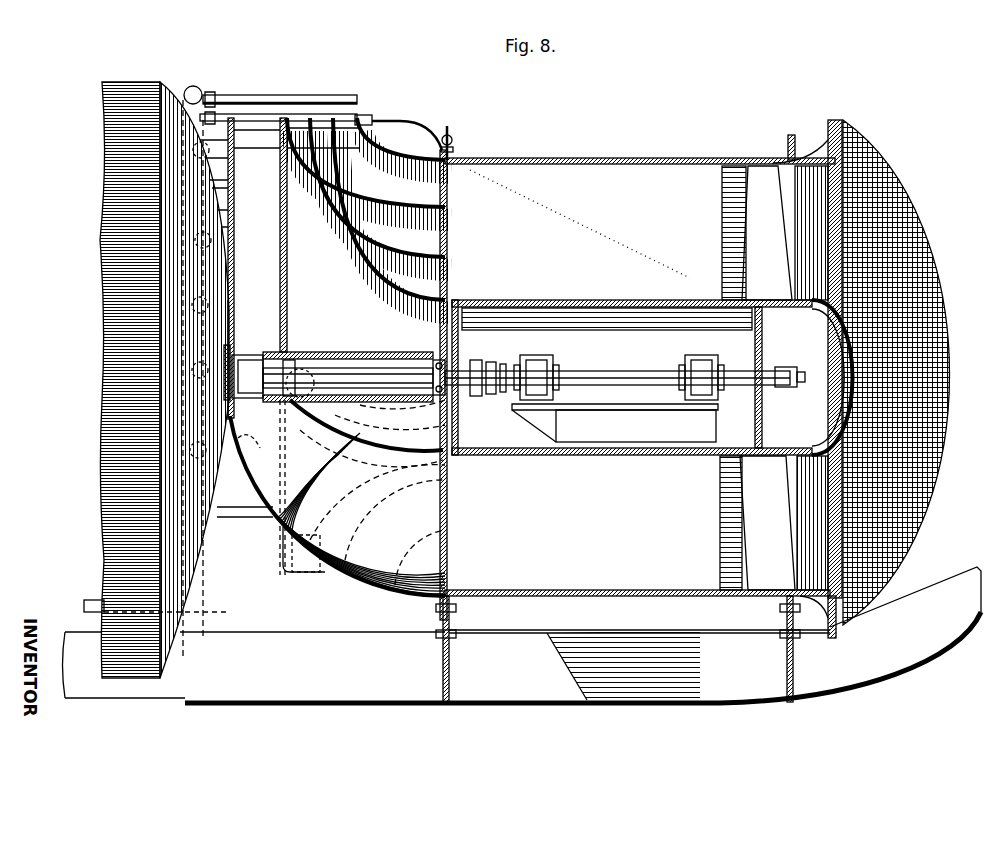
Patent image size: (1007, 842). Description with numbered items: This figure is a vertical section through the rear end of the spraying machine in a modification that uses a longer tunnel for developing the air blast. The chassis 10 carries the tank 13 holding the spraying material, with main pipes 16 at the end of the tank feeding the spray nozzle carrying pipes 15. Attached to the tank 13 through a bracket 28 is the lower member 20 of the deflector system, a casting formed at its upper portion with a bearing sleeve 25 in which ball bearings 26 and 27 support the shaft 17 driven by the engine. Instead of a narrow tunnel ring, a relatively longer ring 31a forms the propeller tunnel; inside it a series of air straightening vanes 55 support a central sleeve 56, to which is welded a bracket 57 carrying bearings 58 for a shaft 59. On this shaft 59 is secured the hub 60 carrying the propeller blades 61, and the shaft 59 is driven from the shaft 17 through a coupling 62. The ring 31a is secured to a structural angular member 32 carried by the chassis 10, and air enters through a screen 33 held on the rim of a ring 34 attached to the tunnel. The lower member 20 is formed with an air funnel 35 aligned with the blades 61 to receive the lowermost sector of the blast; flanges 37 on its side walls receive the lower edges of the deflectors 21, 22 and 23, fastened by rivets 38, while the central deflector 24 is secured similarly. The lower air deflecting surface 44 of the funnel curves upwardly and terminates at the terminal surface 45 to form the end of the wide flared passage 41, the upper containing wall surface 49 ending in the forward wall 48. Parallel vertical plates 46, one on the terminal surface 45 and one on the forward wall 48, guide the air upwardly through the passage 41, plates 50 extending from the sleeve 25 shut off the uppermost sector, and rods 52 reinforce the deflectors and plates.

The chassis 10 is at (158, 702).
The tank 13 is at (106, 386).
The spray nozzle carrying pipes 15 is at (222, 97).
The main pipes 16 is at (193, 86).
The shaft 17 is at (375, 368).
The lower member 20 is at (372, 588).
The deflector 21 is at (462, 137).
The deflector 22 is at (410, 178).
The deflector 23 is at (382, 170).
The central deflector 24 is at (360, 160).
The bearing sleeve 25 is at (325, 352).
The ball bearing 26 is at (242, 354).
The ball bearing 27 is at (434, 358).
The bracket 28 is at (259, 442).
The longer ring 31a is at (612, 158).
The structural angular member 32 is at (445, 690).
The screen 33 is at (930, 482).
The ring 34 is at (860, 585).
The air funnel 35 is at (398, 506).
The flange 37 is at (290, 555).
The rivet 38 is at (290, 575).
The flared passage 41 is at (271, 474).
The lower air deflecting surface 44 is at (268, 505).
The terminal surface 45 is at (235, 352).
The vertical plate 46 is at (282, 190).
The forward wall 48 is at (318, 398).
The upper containing wall surface 49 is at (336, 412).
The plate 50 is at (250, 214).
The rod 52 is at (364, 115).
The air straightening vane 55 is at (620, 257).
The central sleeve 56 is at (652, 302).
The bracket 57 is at (590, 404).
The bearing 58 is at (538, 356).
The shaft 59 is at (637, 370).
The hub 60 is at (784, 368).
The propeller blade 61 is at (774, 378).
The coupling 62 is at (482, 398).